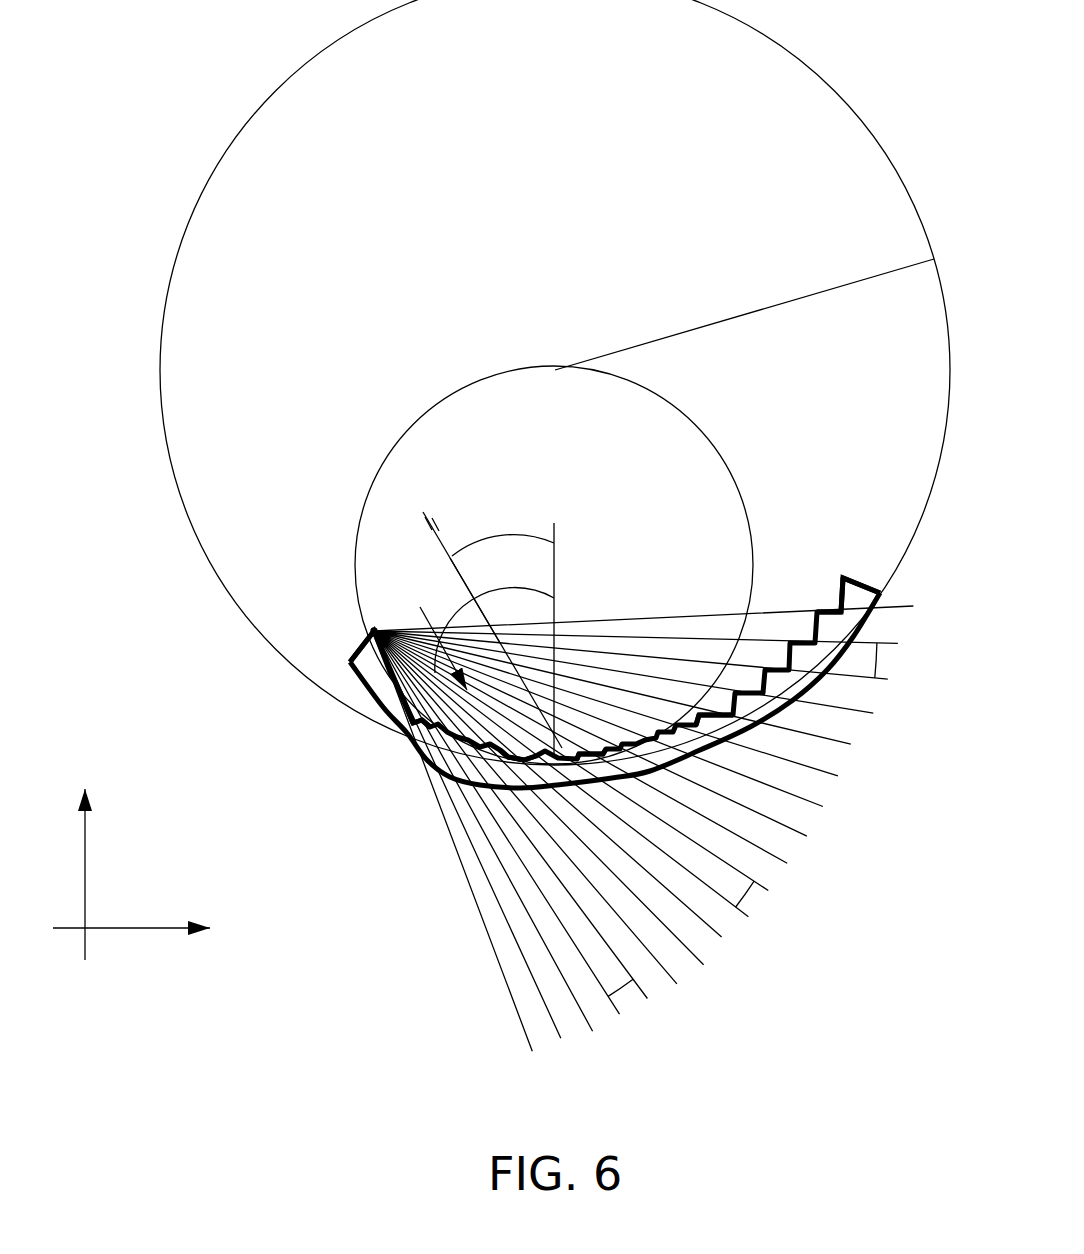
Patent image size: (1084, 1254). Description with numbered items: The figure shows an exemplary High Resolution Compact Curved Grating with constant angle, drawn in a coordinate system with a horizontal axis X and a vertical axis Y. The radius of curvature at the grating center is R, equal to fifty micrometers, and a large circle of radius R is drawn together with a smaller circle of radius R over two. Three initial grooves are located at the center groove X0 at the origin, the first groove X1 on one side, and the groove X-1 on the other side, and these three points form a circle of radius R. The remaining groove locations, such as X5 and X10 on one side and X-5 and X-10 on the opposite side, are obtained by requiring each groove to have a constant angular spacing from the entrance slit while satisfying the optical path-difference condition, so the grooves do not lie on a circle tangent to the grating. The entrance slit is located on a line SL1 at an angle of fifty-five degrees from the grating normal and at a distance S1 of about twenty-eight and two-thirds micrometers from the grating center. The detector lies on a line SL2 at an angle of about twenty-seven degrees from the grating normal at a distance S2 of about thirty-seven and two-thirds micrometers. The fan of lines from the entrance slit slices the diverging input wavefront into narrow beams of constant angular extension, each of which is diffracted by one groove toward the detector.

The radius of curvature at the grating center R is at (744, 314).
The first scan line origin SL1 is at (371, 630).
The second scan line SL2 is at (474, 615).
The entrance slit distance S1 is at (423, 631).
The detector distance S2 is at (473, 600).
The center groove position X0 is at (559, 753).
The first groove position X1 is at (592, 750).
The groove position X5 is at (707, 712).
The groove position X10 is at (836, 586).
The first groove position on the negative side X-1 is at (506, 759).
The groove position X-5 is at (410, 725).
The groove position X-10 is at (367, 636).
The X coordinate axis X is at (138, 961).
The Y coordinate axis Y is at (59, 874).